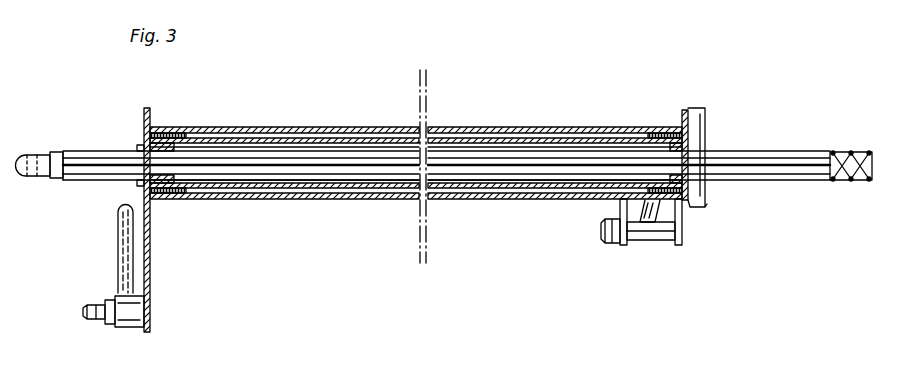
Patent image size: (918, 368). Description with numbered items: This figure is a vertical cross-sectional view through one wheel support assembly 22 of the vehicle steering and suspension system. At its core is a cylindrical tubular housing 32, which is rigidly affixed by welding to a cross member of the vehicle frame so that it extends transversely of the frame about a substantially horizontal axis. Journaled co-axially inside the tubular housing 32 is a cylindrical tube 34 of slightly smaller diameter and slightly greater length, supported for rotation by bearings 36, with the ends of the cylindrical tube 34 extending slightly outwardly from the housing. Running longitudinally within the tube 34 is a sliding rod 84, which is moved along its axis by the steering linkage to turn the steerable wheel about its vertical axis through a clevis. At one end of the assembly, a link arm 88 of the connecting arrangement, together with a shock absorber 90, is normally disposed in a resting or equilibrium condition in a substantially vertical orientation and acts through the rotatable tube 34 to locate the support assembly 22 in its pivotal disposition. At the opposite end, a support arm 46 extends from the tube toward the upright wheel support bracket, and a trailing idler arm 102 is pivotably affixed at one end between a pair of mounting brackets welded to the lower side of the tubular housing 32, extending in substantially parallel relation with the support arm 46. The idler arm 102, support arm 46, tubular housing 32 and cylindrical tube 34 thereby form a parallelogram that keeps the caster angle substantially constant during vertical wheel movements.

The support assembly 22 is at (338, 114).
The tubular housing 32 is at (370, 200).
The cylindrical tube 34 is at (272, 189).
The bearings 36 is at (160, 128).
The support arm 46 is at (705, 116).
The sliding rod 84 is at (108, 161).
The link arm 88 is at (151, 265).
The shock absorber 90 is at (118, 250).
The trailing idler arm 102 is at (645, 242).